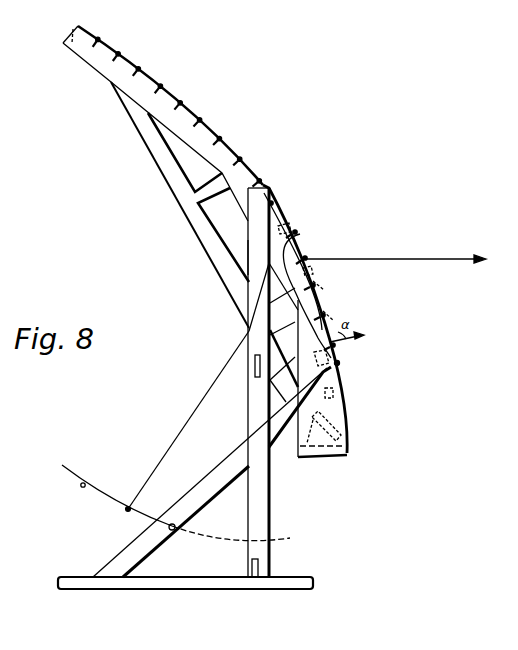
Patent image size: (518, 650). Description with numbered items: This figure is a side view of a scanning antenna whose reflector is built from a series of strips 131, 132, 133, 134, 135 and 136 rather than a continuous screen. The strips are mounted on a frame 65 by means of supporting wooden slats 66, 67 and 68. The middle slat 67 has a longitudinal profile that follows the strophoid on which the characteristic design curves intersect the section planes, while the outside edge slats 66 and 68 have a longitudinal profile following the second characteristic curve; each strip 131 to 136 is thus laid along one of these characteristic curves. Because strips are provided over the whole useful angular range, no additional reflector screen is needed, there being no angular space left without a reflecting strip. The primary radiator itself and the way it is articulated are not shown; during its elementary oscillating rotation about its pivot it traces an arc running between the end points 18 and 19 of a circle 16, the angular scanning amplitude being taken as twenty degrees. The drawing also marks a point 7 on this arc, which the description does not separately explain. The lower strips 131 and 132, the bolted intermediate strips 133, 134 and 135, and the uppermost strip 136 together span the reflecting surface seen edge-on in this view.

The pivot point 7 is at (127, 511).
The circle 16 is at (286, 538).
The arc end point 18 is at (172, 531).
The arc end point 19 is at (81, 486).
The frame 65 is at (249, 428).
The outside edge supporting wooden slat 66 is at (283, 257).
The middle supporting wooden slat 67 is at (306, 272).
The outside edge supporting wooden slat 68 is at (297, 252).
The reflector strip 131 is at (335, 437).
The reflector strip 132 is at (333, 394).
The reflector strip 133 is at (339, 364).
The reflector strip 134 is at (334, 318).
The reflector strip 135 is at (324, 287).
The reflector strip 136 is at (100, 40).